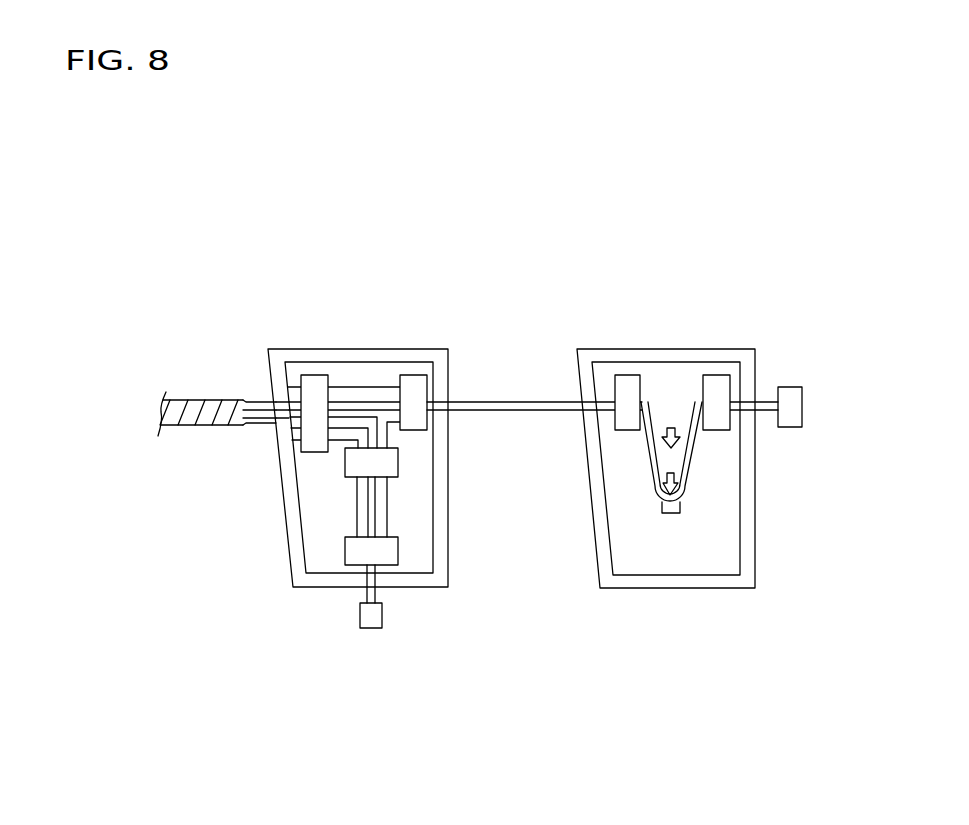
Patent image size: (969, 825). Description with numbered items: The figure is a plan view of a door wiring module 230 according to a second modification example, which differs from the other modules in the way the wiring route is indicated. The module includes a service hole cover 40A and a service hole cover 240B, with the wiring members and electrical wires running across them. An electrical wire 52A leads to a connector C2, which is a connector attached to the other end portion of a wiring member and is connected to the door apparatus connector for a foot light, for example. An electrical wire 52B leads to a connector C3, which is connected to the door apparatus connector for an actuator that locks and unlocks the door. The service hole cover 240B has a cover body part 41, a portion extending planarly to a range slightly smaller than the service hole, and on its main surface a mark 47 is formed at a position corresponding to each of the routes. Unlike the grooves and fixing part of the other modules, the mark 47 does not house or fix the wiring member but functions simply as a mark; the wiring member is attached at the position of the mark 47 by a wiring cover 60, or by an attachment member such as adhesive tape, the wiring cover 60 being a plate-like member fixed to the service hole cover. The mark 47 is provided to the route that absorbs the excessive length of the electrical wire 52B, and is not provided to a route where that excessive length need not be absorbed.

The door wiring module 230 is at (249, 239).
The service hole cover 40A is at (338, 348).
The electrical wire 52A is at (378, 595).
The connector C2 is at (372, 630).
The electrical wire 52B is at (512, 402).
The service hole cover 240B is at (668, 348).
The cover body part 41 is at (727, 543).
The wiring cover 60 is at (627, 378).
The mark 47 is at (683, 483).
The connector C3 is at (790, 387).